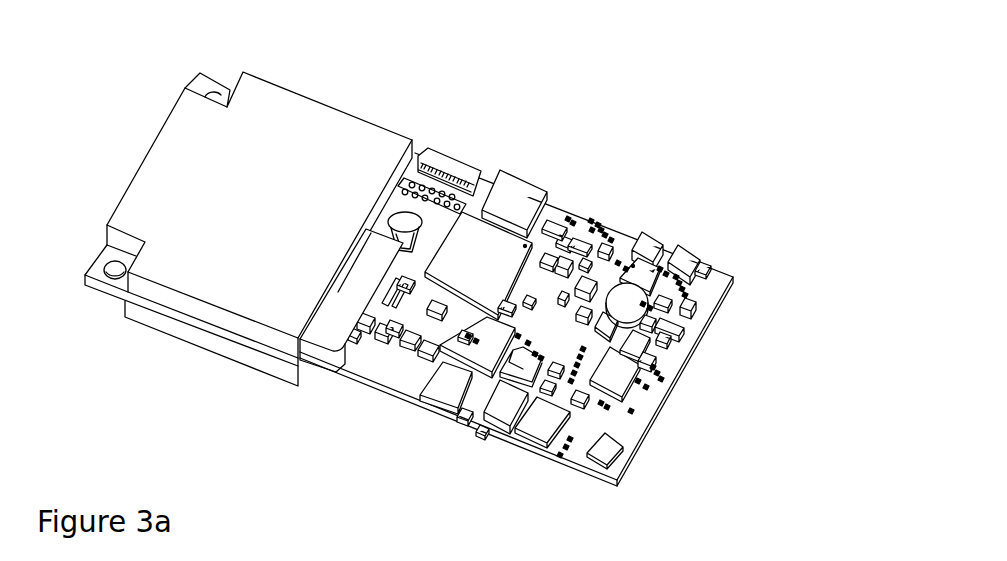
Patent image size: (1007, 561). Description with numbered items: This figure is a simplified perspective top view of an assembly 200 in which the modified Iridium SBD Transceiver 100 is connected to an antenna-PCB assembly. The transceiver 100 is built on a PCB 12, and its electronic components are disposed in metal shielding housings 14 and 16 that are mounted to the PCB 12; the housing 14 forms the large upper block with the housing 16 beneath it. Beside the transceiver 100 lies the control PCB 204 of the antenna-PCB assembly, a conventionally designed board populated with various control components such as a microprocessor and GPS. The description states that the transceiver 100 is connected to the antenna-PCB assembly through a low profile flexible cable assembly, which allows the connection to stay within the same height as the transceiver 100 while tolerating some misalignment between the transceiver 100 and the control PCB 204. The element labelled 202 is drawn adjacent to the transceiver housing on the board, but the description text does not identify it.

The modified Iridium 9603/9603N SBD Transceiver 100 is at (359, 75).
The assembly 200 is at (620, 73).
The PCB 12 is at (161, 319).
The metal shielding housing 14 is at (230, 178).
The metal shielding housing 16 is at (227, 357).
The connector 202 is at (345, 328).
The control PCB 204 is at (582, 212).